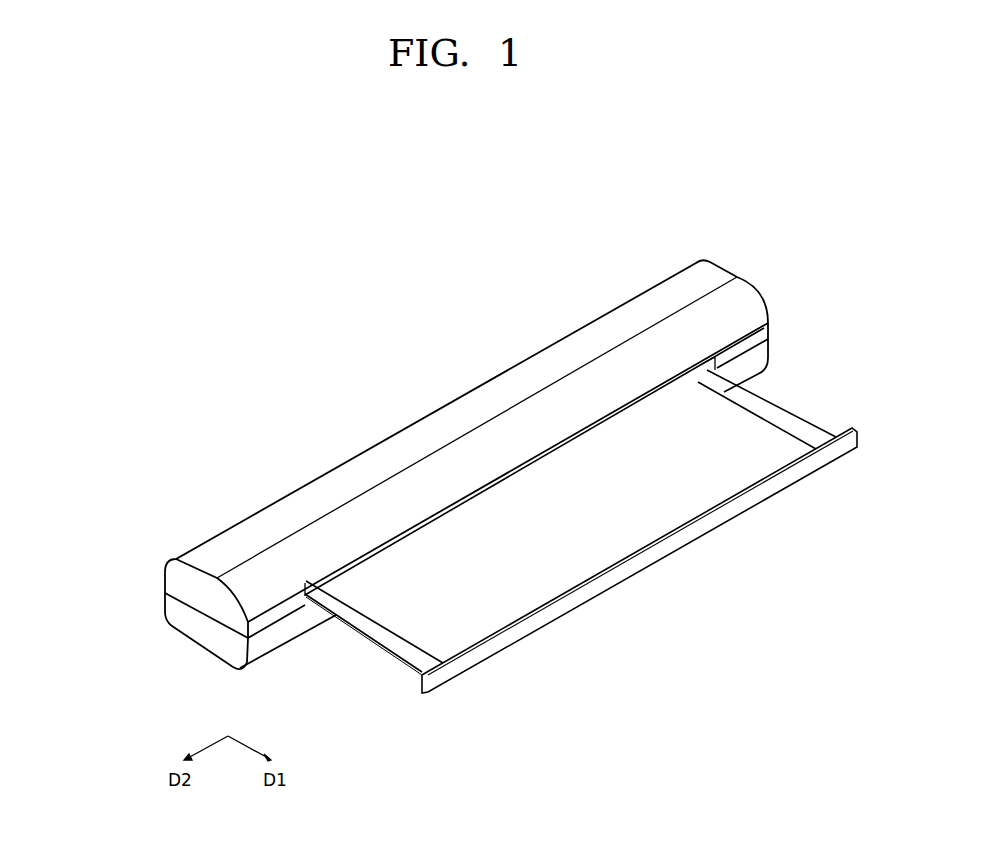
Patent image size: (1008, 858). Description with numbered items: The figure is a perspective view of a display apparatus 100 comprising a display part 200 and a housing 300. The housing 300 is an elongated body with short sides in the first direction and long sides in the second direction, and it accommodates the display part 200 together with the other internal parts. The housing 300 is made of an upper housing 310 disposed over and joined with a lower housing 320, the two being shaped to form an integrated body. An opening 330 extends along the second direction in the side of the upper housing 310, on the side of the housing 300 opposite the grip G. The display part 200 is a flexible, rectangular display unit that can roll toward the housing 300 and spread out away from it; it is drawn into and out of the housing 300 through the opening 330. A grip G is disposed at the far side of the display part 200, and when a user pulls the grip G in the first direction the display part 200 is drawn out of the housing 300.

The display apparatus 100 is at (431, 457).
The display part 200 is at (581, 510).
The housing 300 is at (408, 464).
The upper housing 310 is at (166, 574).
The lower housing 320 is at (166, 610).
The opening 330 is at (305, 599).
The grip G is at (600, 597).